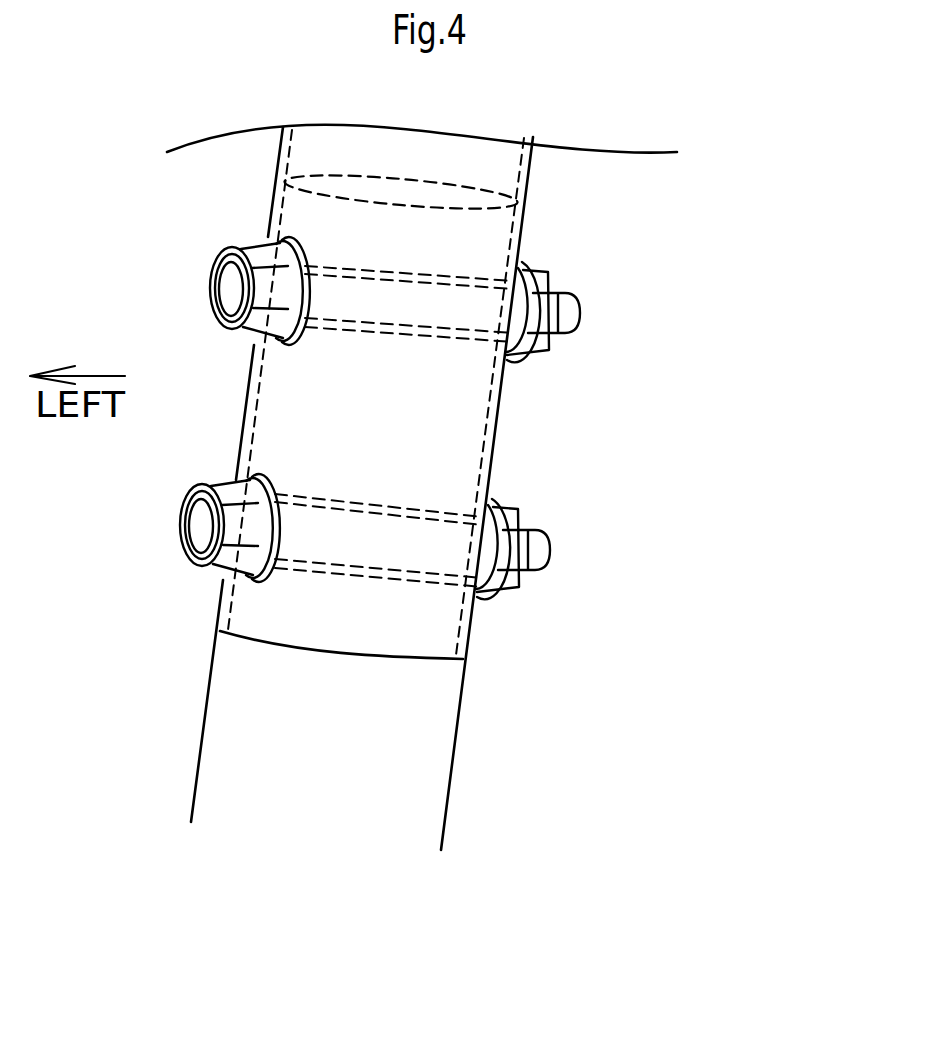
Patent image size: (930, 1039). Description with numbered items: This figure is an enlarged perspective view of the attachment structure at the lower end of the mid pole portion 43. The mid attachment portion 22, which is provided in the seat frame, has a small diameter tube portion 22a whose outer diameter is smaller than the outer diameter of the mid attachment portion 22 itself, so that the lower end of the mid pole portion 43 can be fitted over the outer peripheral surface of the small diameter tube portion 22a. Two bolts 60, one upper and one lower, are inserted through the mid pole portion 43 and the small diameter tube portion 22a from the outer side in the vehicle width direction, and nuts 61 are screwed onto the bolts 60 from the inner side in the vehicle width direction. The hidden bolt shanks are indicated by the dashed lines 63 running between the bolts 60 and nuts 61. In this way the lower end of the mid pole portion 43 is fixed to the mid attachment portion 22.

The mid attachment portion 22 is at (413, 763).
The small diameter tube portion 22a is at (482, 477).
The mid pole portion 43 is at (502, 173).
The bolt 60 is at (216, 292).
The nut 61 is at (547, 322).
The bolt 63 is at (380, 333).